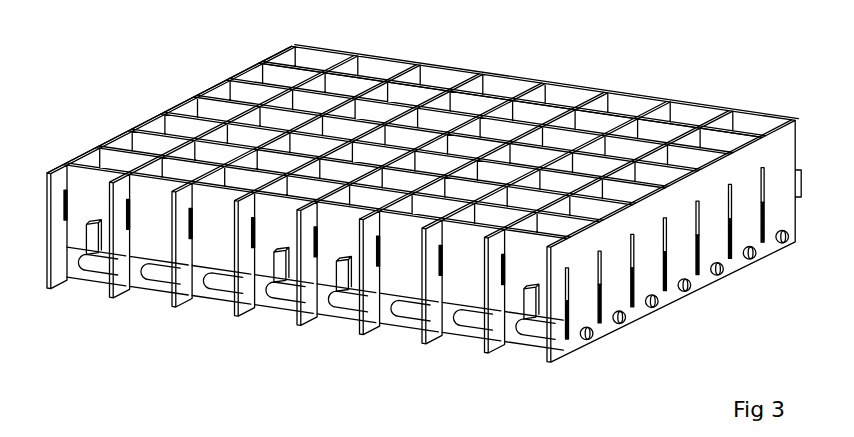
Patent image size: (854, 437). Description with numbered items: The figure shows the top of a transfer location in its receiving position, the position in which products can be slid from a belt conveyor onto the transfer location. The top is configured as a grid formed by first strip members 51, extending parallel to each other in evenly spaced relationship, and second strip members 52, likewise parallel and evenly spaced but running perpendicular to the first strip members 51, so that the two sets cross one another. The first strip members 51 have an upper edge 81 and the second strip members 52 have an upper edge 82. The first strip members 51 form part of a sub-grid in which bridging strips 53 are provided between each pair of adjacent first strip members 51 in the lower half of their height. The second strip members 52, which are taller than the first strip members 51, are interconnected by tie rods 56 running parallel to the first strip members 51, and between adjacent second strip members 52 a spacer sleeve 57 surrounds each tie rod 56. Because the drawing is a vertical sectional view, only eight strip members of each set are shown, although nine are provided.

The first strip members 51 is at (565, 100).
The second strip members 52 is at (375, 97).
The bridging strips 53 is at (90, 238).
The tie rods 56 is at (622, 317).
The spacer sleeve 57 is at (465, 325).
The upper edge 81 is at (612, 113).
The upper edge 82 is at (183, 97).